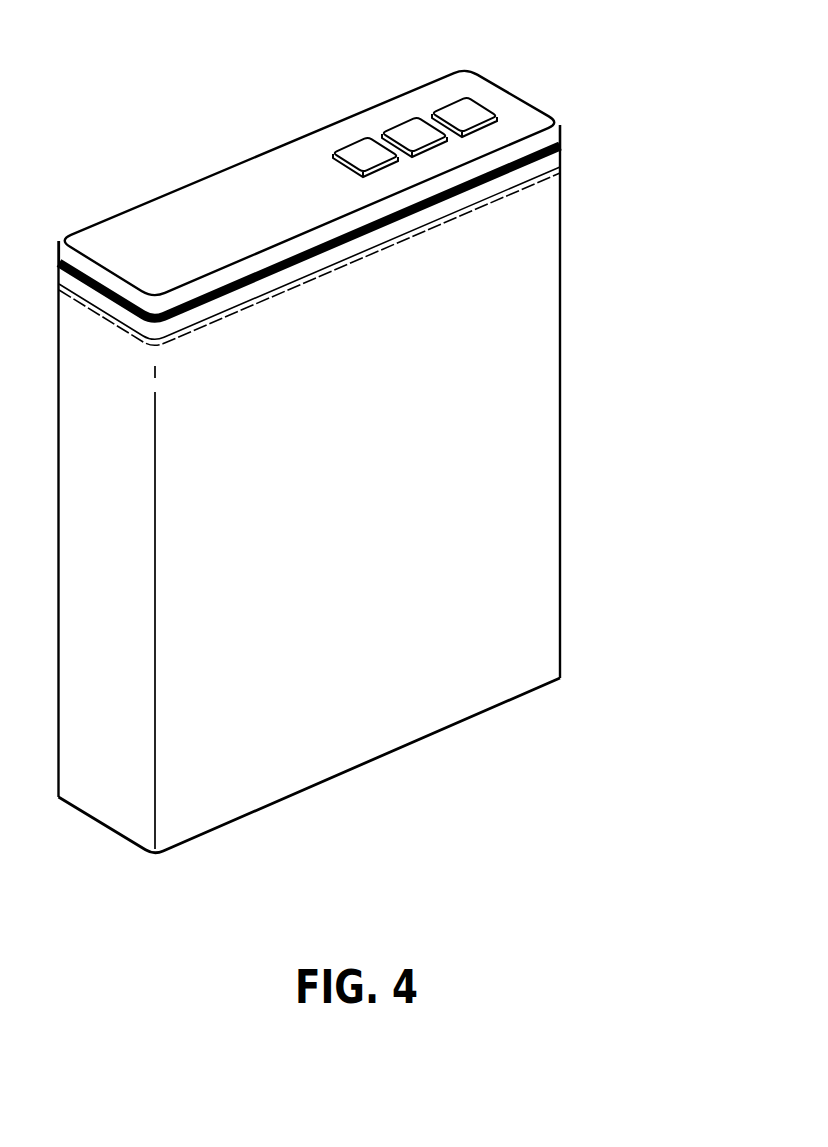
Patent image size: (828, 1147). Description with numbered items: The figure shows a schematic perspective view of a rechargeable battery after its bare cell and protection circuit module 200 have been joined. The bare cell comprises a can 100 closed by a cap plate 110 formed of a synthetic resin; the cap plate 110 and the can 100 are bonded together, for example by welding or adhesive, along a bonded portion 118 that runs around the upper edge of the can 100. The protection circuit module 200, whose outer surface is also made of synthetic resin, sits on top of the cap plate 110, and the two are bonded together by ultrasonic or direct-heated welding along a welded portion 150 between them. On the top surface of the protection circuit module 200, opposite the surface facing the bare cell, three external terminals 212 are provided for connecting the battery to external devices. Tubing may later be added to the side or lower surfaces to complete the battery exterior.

The can 100 is at (530, 403).
The cap plate 110 is at (540, 170).
The bonded portion 118 is at (528, 192).
The welded portion 150 is at (538, 150).
The protection circuit module 200 is at (195, 167).
The external terminals 212 is at (457, 105).